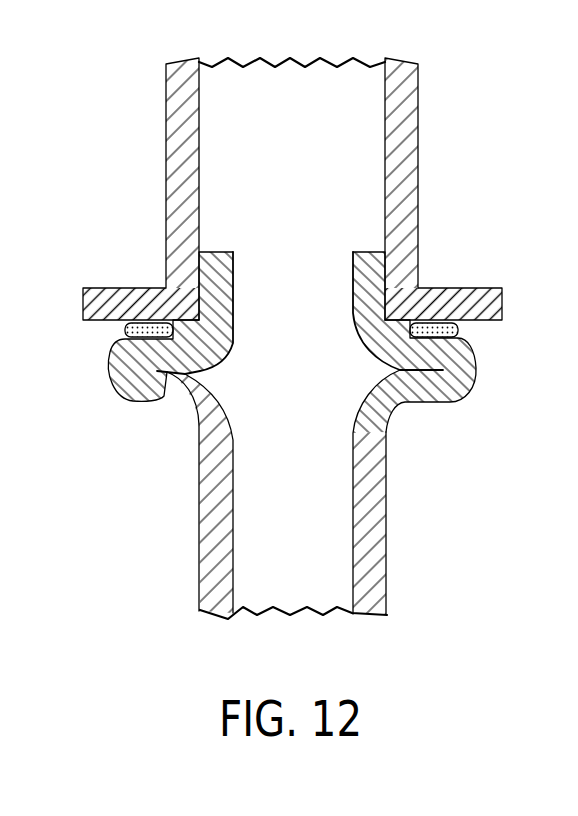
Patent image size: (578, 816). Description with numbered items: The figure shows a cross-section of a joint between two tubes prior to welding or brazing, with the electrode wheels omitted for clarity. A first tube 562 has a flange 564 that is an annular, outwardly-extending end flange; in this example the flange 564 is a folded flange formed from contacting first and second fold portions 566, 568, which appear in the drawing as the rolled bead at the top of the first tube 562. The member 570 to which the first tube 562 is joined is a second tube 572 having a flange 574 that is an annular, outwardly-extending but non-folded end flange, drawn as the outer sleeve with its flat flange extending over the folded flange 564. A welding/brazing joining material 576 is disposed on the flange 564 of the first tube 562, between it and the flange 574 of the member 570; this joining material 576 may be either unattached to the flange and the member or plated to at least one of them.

The first tube 562 is at (388, 542).
The flange 564 is at (437, 403).
The first fold portion 566 is at (167, 386).
The second fold portion 568 is at (113, 353).
The member 570 is at (419, 160).
The second tube 572 is at (419, 103).
The flange 574 is at (460, 288).
The welding/brazing joining material 576 is at (459, 333).